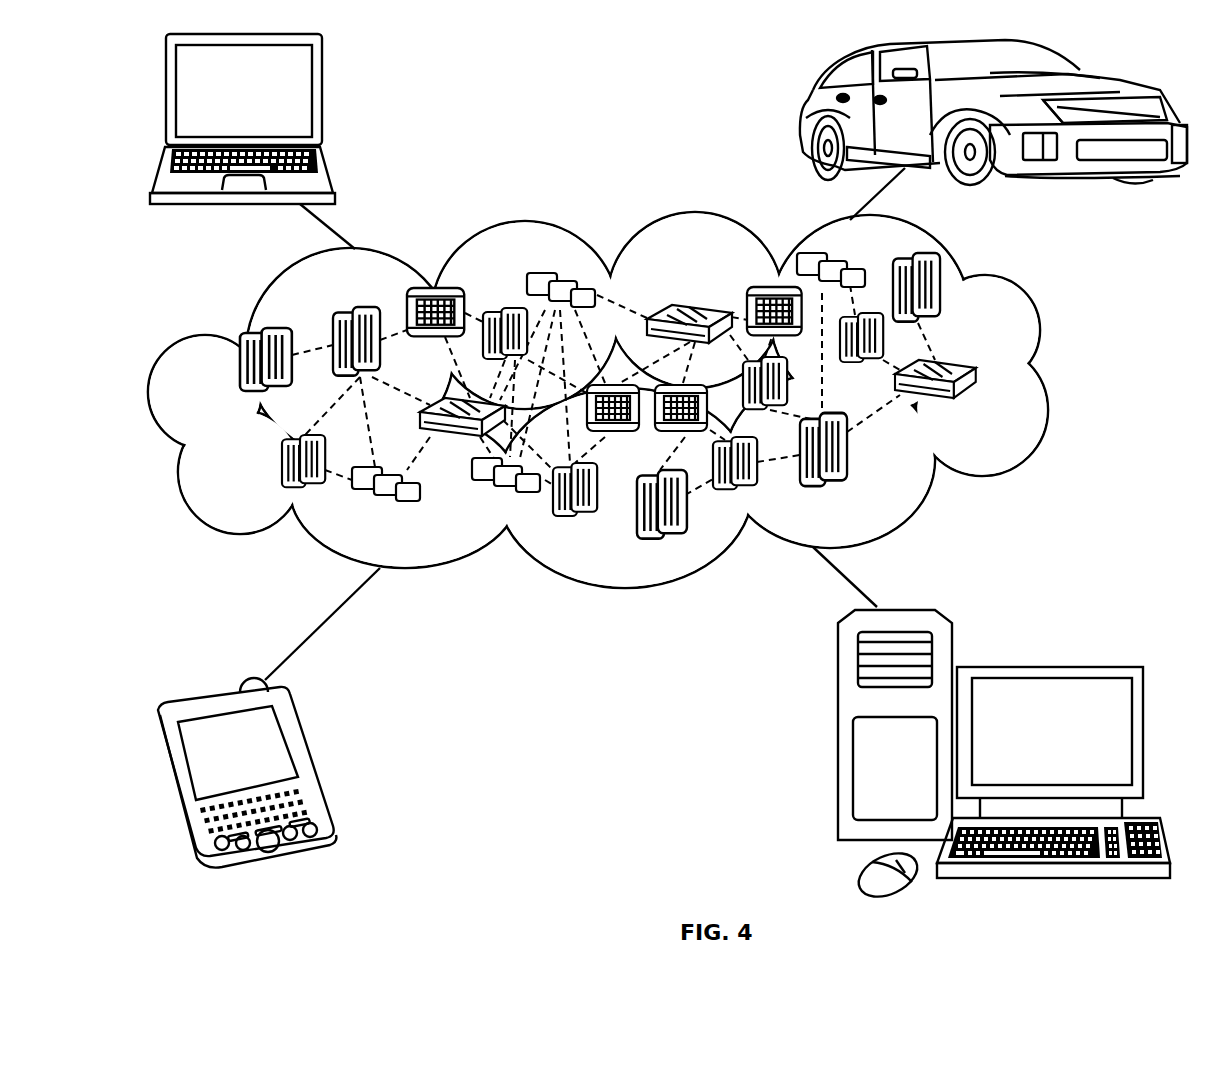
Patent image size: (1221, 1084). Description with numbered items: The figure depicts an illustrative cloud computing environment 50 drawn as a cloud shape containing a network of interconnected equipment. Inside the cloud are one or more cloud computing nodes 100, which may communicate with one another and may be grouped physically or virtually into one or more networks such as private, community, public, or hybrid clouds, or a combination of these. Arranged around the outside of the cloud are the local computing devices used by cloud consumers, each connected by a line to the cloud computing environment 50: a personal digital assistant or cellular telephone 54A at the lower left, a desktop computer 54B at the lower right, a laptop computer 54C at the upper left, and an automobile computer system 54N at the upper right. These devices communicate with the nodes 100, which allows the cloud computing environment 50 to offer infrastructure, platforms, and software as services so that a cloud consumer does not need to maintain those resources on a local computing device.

The cloud computing environment 50 is at (1049, 374).
The cloud computing nodes 100 is at (640, 400).
The personal digital assistant or cellular telephone 54A is at (307, 760).
The desktop computer 54B is at (1050, 667).
The laptop computer 54C is at (322, 100).
The automobile computer system 54N is at (808, 112).